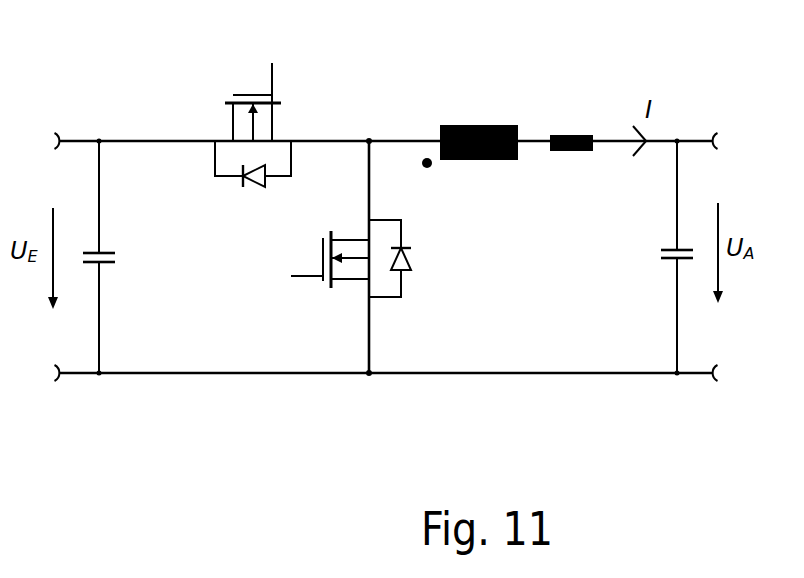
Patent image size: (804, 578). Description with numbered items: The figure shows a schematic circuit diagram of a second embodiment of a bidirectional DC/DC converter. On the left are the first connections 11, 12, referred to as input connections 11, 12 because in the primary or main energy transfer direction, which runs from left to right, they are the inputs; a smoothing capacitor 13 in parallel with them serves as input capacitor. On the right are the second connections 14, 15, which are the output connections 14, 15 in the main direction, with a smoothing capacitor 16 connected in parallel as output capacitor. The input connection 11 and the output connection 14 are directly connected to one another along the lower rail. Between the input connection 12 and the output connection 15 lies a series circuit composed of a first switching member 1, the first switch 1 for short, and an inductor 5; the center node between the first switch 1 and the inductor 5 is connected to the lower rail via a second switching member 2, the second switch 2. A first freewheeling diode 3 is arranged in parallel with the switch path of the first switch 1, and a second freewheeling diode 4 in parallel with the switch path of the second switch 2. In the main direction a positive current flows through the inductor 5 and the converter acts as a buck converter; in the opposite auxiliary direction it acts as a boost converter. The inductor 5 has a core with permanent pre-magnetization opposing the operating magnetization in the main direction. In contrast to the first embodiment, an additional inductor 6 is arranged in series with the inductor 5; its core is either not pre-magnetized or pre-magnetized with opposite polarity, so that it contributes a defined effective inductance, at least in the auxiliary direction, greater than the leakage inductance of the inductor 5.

The first switching member 1 is at (248, 93).
The second switching member 2 is at (312, 270).
The first freewheeling diode 3 is at (250, 181).
The second freewheeling diode 4 is at (405, 262).
The inductor 5 is at (475, 122).
The additional inductor 6 is at (568, 130).
The first connection 11 is at (58, 376).
The first connection 12 is at (57, 128).
The smoothing capacitor 13 is at (100, 248).
The second connection 14 is at (720, 378).
The second connection 15 is at (716, 128).
The smoothing capacitor 16 is at (660, 258).